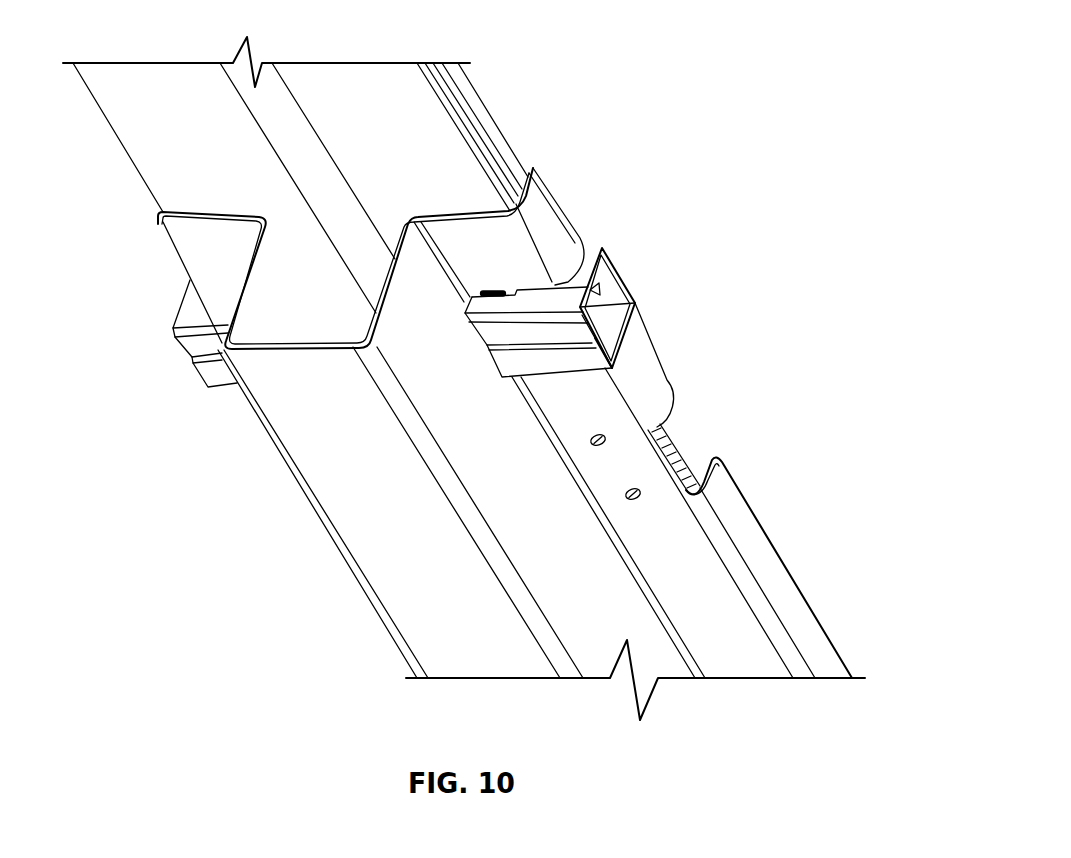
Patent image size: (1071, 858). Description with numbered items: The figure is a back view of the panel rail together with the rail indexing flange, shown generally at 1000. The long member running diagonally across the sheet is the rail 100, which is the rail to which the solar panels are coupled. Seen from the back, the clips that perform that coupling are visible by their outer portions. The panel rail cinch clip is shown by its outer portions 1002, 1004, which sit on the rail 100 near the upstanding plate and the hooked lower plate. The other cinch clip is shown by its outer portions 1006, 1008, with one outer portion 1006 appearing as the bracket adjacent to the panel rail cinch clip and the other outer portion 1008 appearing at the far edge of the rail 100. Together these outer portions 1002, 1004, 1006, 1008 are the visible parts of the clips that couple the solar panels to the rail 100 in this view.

The back view of the panel rail together with the rail indexing flange 1000 is at (612, 50).
The rail 100 is at (285, 434).
The outer portion of panel rail cinch clip 1002 is at (557, 217).
The outer portion of panel rail cinch clip 1004 is at (645, 368).
The outer portion of cinch clip 1006 is at (607, 255).
The outer portion of cinch clip 1008 is at (193, 313).